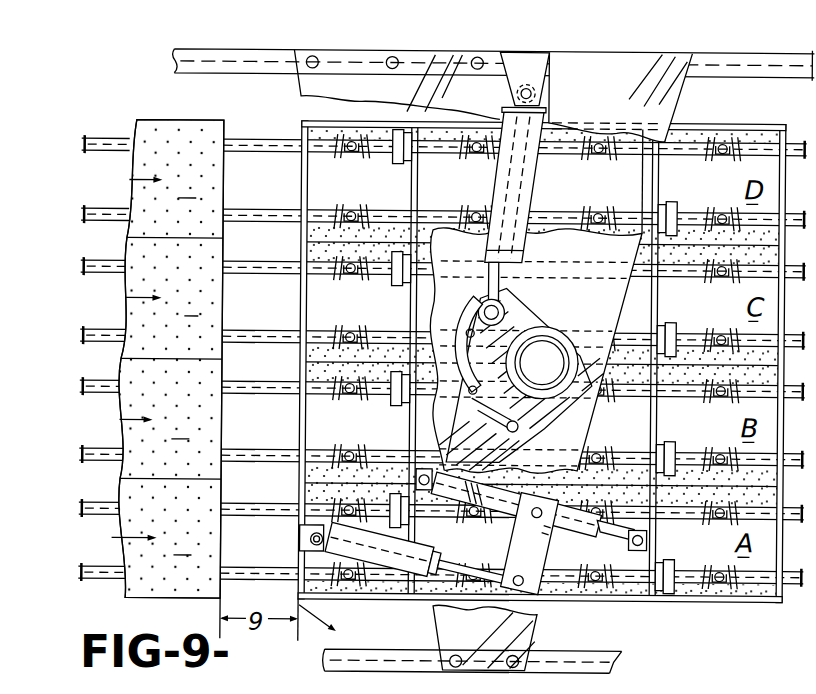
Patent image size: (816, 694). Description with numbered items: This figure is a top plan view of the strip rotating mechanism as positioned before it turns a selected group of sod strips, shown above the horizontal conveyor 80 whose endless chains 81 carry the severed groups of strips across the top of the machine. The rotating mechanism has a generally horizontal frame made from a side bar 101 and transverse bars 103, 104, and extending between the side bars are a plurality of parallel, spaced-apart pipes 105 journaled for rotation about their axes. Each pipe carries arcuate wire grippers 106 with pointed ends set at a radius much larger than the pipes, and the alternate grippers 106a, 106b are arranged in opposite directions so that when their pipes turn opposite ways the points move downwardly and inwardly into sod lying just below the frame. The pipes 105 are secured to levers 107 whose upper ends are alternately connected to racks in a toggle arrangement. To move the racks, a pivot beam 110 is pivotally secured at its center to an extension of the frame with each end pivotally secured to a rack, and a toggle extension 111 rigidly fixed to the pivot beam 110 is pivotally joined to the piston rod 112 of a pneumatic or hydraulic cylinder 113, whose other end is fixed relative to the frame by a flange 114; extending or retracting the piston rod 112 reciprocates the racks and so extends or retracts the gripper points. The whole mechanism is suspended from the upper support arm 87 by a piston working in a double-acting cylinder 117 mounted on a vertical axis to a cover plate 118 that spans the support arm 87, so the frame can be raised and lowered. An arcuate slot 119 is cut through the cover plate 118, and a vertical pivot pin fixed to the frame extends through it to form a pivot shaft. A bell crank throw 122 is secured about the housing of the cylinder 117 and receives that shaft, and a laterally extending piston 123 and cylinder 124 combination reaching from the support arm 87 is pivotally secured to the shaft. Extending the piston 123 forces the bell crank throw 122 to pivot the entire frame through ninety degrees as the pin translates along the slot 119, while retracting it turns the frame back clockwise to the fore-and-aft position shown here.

The horizontal conveyor 80 is at (127, 118).
The endless chains 81 is at (102, 215).
The support arm 87 is at (792, 57).
The side bar 101 is at (300, 421).
The transverse bar 103 is at (724, 103).
The transverse bar 104 is at (720, 601).
The pipes 105 is at (688, 207).
The wire grippers 106 is at (578, 160).
The gripper 106a is at (546, 411).
The gripper 106b is at (722, 412).
The levers 107 is at (660, 199).
The pivot beam 110 is at (576, 540).
The toggle extension 111 is at (524, 540).
The piston rod 112 is at (488, 565).
The pneumatic or hydraulic cylinder 113 is at (390, 537).
The flange 114 is at (311, 537).
The cylinder 117 is at (553, 373).
The cover plate 118 is at (290, 90).
The arcuate slot 119 is at (516, 427).
The bell crank throw 122 is at (522, 311).
The piston 123 is at (493, 185).
The cylinder 124 is at (481, 292).